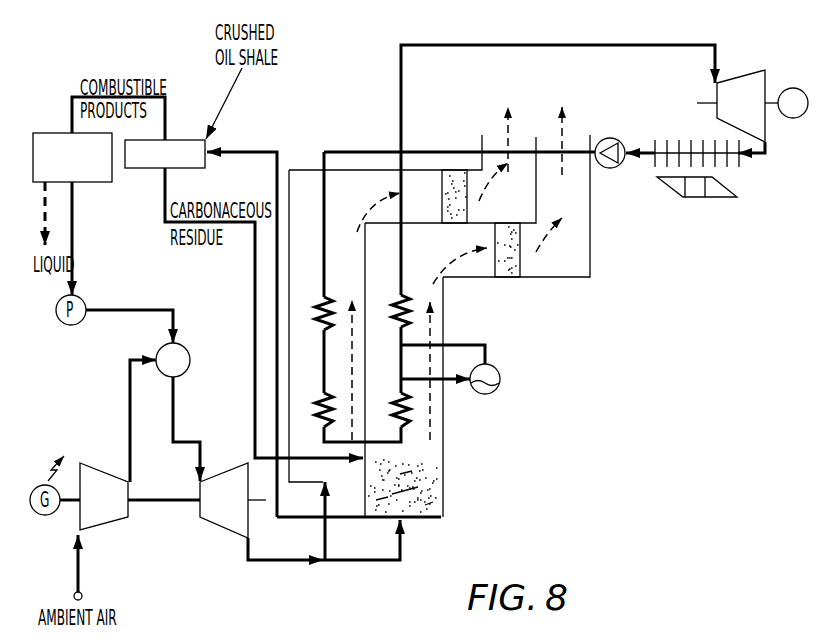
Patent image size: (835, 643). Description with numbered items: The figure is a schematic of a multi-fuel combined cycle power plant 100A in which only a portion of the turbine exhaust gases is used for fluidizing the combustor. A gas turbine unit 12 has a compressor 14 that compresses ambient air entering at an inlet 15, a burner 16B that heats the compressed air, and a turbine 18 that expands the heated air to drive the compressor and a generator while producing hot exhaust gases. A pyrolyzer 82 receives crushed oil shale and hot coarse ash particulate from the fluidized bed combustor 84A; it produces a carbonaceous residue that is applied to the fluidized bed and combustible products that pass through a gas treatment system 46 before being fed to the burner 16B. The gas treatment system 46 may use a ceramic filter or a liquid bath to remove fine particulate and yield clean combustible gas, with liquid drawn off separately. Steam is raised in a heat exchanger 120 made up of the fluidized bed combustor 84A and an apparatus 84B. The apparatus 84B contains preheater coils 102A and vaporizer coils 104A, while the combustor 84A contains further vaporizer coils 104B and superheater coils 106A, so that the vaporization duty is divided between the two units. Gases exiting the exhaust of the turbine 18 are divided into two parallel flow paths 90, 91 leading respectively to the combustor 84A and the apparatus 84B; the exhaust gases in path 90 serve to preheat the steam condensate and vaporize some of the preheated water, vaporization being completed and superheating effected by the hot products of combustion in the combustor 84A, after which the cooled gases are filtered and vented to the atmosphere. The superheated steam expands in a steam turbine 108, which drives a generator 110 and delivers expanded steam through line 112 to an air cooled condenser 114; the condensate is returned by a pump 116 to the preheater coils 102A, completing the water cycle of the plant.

The power plant 100A is at (79, 74).
The gas treatment system 46 is at (42, 133).
The pyrolyzer 82 is at (184, 140).
The heat exchanger 120 is at (360, 139).
The fluidized bed combustor 84A is at (443, 490).
The apparatus 84B is at (290, 353).
The preheater coils 102A is at (324, 311).
The vaporizer coils 104A is at (324, 415).
The vaporizer coils 104B is at (408, 419).
The superheater coils 106A is at (404, 292).
The steam turbine 108 is at (726, 84).
The generator 110 is at (784, 89).
The line 112 is at (767, 157).
The air cooled condenser 114 is at (739, 181).
The pump 116 is at (620, 168).
The burner 16B is at (182, 346).
The compressor 14 is at (107, 477).
The turbine 18 is at (224, 478).
The gas turbine unit 12 is at (165, 535).
The ambient air inlet 15 is at (78, 571).
The flow path 91 is at (327, 548).
The flow path 90 is at (402, 548).